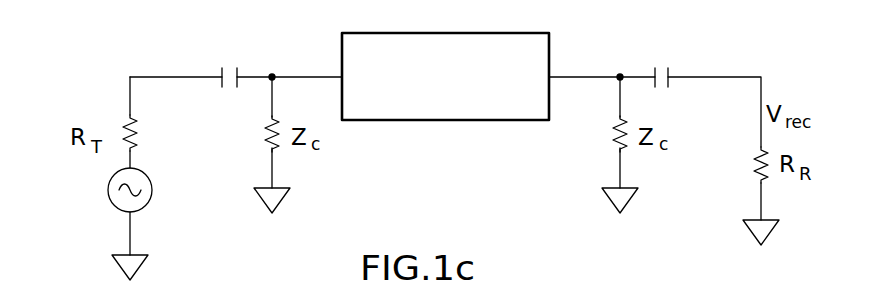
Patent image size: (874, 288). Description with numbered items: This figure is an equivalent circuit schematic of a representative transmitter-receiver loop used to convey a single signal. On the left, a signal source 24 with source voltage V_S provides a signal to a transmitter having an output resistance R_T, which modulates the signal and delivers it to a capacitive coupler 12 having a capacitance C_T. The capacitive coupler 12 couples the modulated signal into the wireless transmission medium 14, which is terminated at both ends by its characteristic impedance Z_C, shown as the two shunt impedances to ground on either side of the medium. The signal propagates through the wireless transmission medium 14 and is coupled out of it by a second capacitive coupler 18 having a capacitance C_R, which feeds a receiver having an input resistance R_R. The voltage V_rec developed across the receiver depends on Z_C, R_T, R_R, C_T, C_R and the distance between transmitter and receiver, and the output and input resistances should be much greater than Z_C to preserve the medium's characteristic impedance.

The capacitive coupler 12 is at (227, 108).
The wireless transmission medium 14 is at (445, 120).
The capacitive coupler 18 is at (666, 100).
The signal source 24 is at (106, 190).